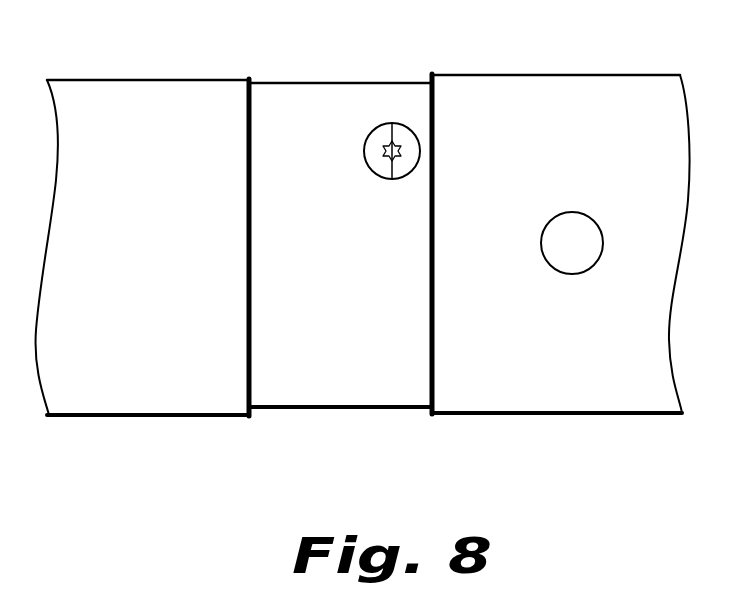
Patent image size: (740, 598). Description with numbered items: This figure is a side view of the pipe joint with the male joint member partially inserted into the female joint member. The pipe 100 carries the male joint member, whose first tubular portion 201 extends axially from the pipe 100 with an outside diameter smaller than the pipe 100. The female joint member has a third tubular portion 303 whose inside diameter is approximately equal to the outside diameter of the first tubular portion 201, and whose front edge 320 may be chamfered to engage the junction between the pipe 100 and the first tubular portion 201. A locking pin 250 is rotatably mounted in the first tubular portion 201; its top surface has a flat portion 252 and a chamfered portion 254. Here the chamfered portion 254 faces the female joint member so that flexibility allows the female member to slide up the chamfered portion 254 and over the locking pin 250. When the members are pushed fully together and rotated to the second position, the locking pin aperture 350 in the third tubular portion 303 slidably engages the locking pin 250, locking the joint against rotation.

The pipe 100 is at (146, 416).
The first tubular portion 201 is at (315, 404).
The third tubular portion 303 is at (594, 93).
The front edge 320 is at (432, 411).
The locking pin 250 is at (399, 111).
The flat portion 252 is at (386, 152).
The chamfered portion 254 is at (419, 147).
The locking pin aperture 350 is at (581, 245).